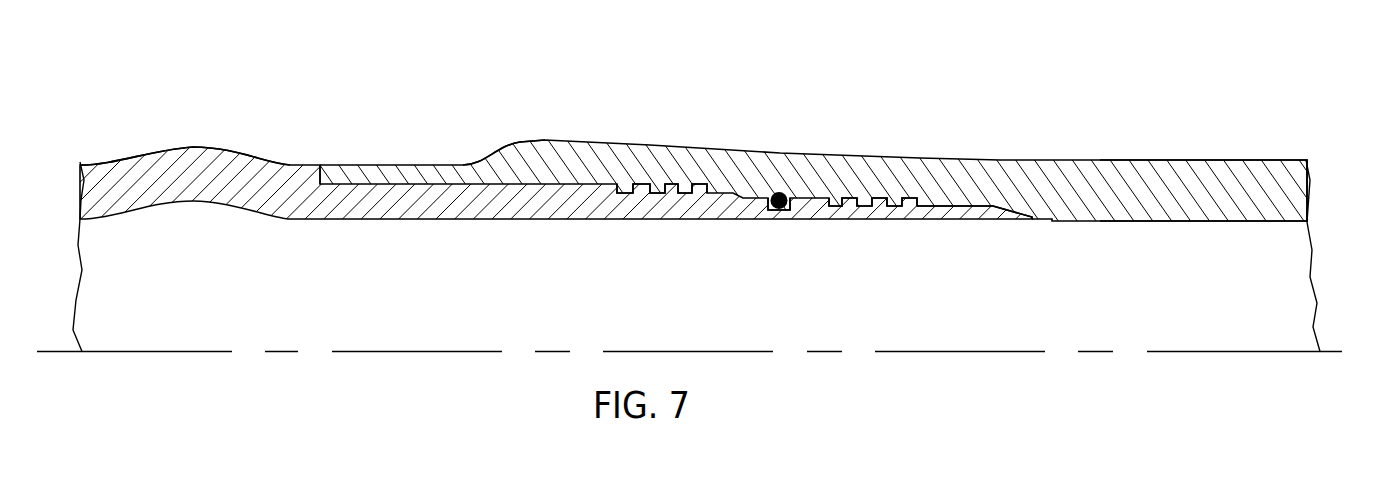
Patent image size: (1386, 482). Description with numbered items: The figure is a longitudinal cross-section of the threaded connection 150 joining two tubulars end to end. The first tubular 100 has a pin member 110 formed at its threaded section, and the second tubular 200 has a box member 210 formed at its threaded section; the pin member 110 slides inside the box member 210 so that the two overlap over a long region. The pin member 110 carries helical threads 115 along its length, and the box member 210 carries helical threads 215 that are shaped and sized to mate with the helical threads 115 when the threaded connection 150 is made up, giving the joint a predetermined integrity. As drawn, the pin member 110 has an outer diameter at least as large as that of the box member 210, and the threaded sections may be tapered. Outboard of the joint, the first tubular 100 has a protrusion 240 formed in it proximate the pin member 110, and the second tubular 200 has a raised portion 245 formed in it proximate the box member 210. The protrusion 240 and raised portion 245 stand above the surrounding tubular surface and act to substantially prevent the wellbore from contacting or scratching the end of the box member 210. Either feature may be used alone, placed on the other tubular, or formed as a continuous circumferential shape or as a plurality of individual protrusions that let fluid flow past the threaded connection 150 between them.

The first tubular 100 is at (93, 166).
The pin member 110 is at (998, 215).
The helical threads 115 is at (885, 203).
The threaded connection 150 is at (665, 112).
The second tubular 200 is at (1288, 180).
The box member 210 is at (812, 180).
The helical threads 215 is at (884, 198).
The protrusion 240 is at (203, 146).
The raised portion 245 is at (517, 141).